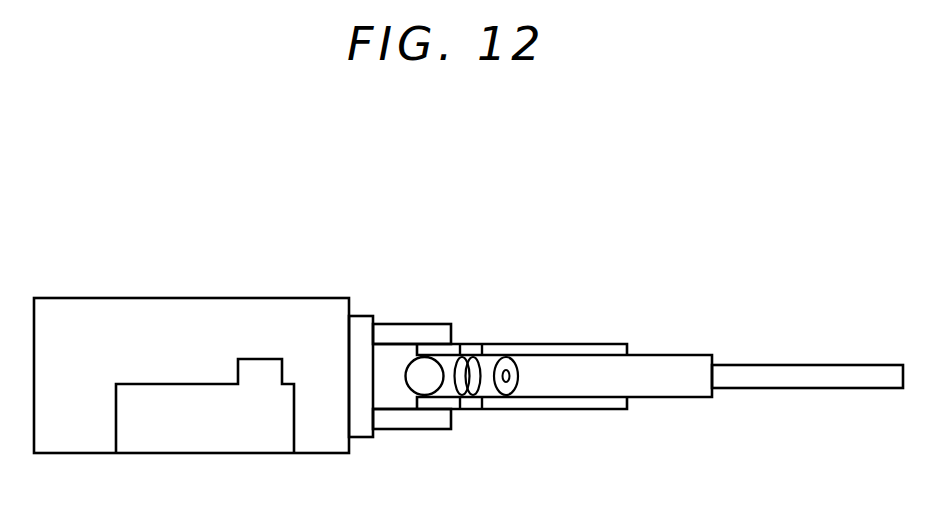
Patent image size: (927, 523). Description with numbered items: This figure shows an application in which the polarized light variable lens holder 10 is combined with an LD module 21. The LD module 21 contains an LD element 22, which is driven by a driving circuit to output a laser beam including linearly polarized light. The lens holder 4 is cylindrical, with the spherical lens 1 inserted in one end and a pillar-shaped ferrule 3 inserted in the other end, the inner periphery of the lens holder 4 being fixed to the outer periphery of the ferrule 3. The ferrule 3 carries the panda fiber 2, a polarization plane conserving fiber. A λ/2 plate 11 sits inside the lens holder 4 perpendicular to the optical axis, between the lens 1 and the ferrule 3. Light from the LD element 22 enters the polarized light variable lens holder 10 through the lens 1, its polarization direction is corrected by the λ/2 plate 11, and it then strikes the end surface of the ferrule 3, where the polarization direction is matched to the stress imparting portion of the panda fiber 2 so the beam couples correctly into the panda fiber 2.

The polarized light variable lens holder 10 is at (503, 273).
The spherical lens 1 is at (405, 362).
The panda fiber 2 is at (808, 364).
The ferrule 3 is at (668, 390).
The lens holder 4 is at (548, 344).
The λ/2 plate 11 is at (472, 400).
The LD module 21 is at (89, 298).
The LD element 22 is at (253, 305).